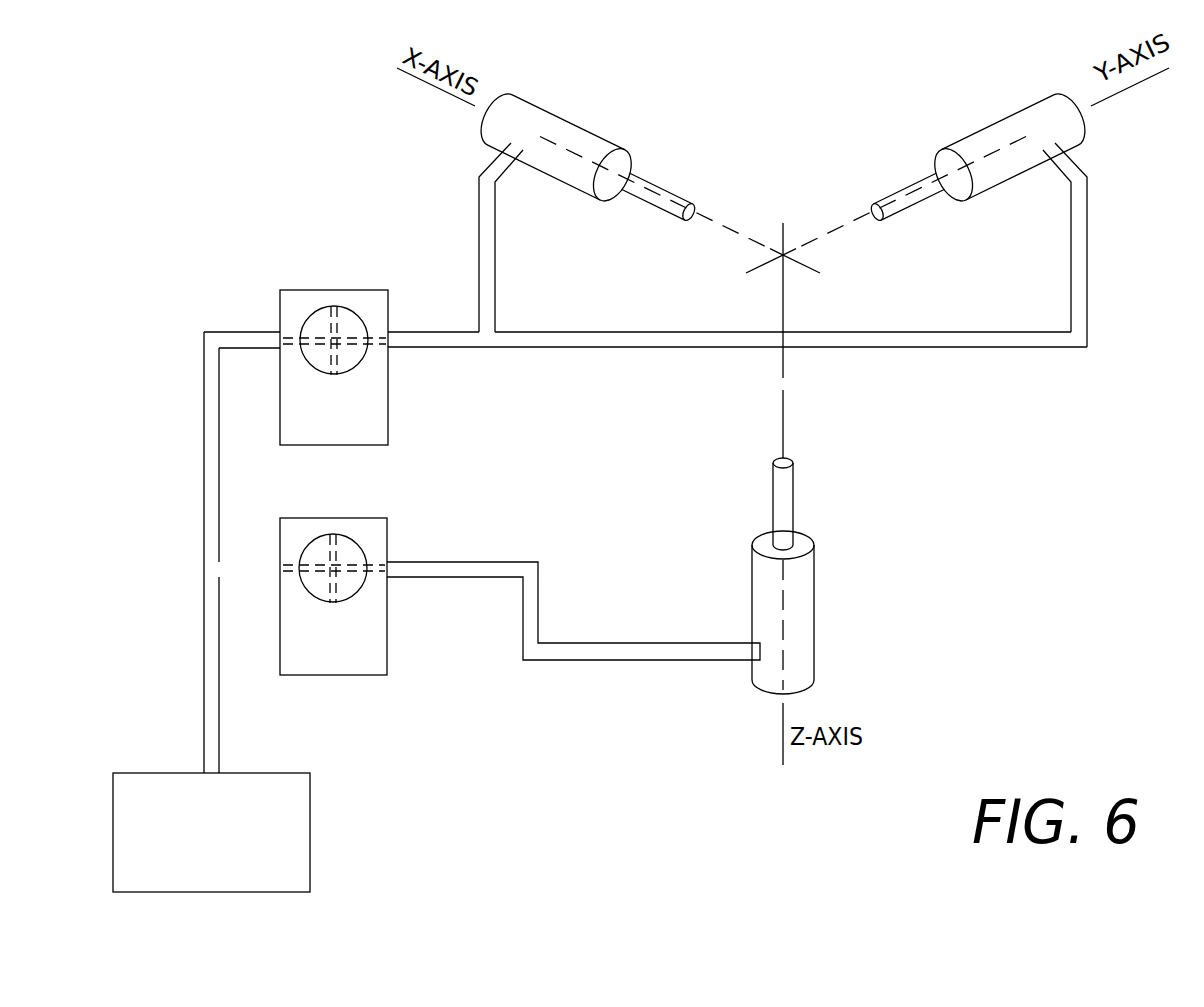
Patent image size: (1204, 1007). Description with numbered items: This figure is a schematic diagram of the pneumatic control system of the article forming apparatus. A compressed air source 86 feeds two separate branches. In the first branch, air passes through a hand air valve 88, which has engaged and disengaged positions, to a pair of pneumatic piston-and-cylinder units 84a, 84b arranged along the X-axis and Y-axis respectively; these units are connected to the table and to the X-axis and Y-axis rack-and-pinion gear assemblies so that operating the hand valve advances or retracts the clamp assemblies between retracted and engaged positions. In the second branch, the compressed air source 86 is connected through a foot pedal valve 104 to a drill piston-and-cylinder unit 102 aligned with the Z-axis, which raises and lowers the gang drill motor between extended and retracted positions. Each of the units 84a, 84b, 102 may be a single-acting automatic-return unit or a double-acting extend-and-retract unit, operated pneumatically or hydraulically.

The pneumatic piston-and-cylinder unit 84a is at (538, 108).
The pneumatic piston-and-cylinder unit 84b is at (1033, 103).
The hand air valve 88 is at (363, 290).
The foot pedal valve 104 is at (363, 518).
The compressed air source 86 is at (287, 773).
The pneumatic piston-and-cylinder unit 102 is at (814, 576).